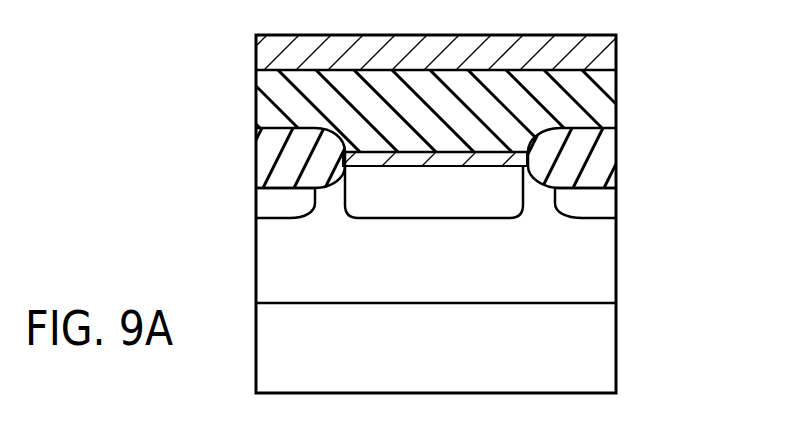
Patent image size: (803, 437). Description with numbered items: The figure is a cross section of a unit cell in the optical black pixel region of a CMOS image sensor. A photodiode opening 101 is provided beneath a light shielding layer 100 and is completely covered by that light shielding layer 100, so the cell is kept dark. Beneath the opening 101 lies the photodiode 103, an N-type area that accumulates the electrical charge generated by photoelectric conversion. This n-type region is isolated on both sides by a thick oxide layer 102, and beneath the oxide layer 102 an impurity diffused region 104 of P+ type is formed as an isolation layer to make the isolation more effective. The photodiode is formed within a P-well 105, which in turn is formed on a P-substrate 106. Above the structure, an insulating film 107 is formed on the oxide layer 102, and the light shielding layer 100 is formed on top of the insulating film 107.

The light shielding layer 100 is at (616, 46).
The insulating film 107 is at (616, 92).
The thick oxide layer 102 is at (616, 138).
The photodiode opening 101 is at (385, 160).
The photodiode 103 is at (503, 212).
The impurity diffused region 104 is at (293, 217).
The P-well 105 is at (616, 280).
The P-substrate 106 is at (616, 353).